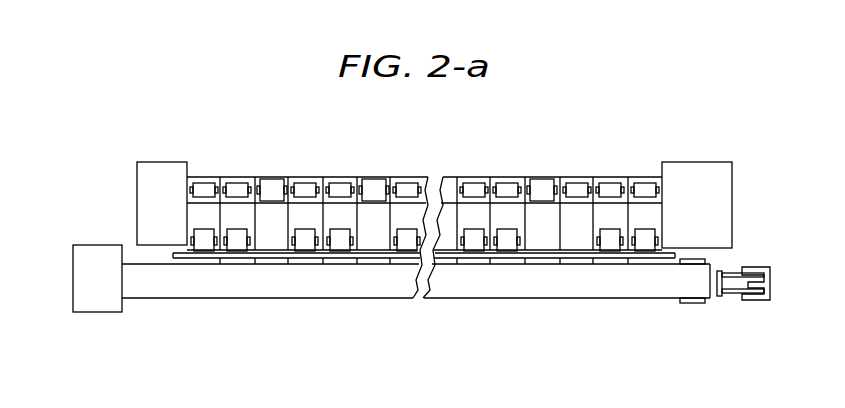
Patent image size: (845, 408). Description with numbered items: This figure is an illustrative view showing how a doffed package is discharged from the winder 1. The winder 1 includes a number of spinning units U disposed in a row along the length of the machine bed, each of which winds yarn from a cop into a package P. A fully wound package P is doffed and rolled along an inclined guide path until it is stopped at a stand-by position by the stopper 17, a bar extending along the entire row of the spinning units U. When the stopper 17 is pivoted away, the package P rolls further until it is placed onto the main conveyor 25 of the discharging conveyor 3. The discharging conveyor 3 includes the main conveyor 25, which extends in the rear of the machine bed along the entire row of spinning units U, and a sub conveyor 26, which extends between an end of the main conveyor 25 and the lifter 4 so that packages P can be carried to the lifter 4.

The winder 1 is at (343, 170).
The spinning units U is at (268, 177).
The package P is at (578, 190).
The stopper 17 is at (273, 257).
The main conveyor 25 is at (200, 284).
The discharging conveyor 3 is at (545, 306).
The sub conveyor 26 is at (726, 298).
The lifter 4 is at (773, 283).